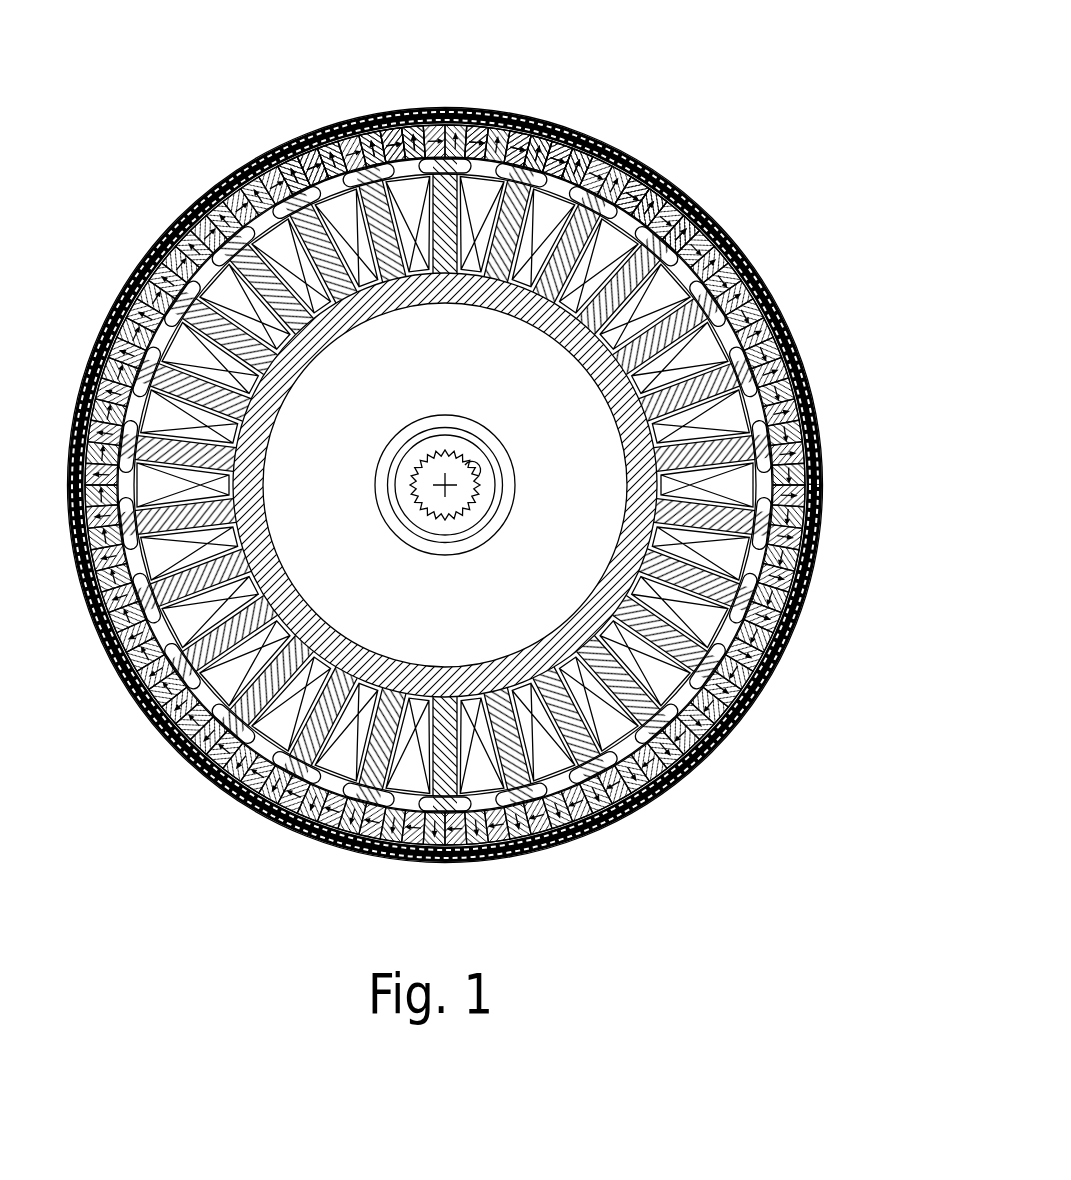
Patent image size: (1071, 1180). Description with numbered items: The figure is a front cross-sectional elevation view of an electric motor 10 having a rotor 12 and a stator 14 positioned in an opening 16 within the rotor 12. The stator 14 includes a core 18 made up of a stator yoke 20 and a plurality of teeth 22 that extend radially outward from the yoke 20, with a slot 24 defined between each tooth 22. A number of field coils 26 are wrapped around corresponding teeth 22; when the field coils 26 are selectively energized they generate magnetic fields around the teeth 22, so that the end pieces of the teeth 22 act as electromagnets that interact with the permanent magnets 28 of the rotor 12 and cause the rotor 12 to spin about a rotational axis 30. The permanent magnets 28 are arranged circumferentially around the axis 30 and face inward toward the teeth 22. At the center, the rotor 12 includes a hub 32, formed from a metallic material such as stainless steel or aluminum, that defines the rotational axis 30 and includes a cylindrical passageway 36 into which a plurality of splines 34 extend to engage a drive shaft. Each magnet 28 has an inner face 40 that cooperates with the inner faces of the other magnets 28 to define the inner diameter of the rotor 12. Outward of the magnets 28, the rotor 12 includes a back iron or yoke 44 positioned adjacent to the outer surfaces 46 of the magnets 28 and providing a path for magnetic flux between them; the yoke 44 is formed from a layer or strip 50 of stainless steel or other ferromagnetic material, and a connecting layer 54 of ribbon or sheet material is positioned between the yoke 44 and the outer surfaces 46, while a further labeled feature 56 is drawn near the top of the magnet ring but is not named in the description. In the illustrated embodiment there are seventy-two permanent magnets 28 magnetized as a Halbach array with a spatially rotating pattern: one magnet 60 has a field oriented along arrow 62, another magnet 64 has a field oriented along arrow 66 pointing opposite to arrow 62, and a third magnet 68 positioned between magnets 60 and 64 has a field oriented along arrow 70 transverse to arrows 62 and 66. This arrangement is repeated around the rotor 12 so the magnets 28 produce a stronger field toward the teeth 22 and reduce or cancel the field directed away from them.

The electric motor 10 is at (690, 74).
The rotor 12 is at (830, 346).
The stator 14 is at (544, 326).
The opening 16 is at (812, 566).
The core 18 is at (637, 503).
The stator yoke 20 is at (640, 441).
The teeth 22 is at (800, 440).
The slot 24 is at (728, 727).
The field coils 26 is at (512, 692).
The permanent magnets 28 is at (660, 188).
The rotational axis 30 is at (437, 495).
The hub 32 is at (428, 451).
The splines 34 is at (484, 478).
The cylindrical passageway 36 is at (458, 515).
The inner face 40 is at (726, 244).
The back iron or yoke 44 is at (545, 128).
The outer surfaces 46 is at (572, 127).
The strip 50 is at (645, 160).
The connecting layer 54 is at (470, 112).
The magnetization direction 56 is at (515, 106).
The magnet 60 is at (297, 150).
The arrow 62 is at (293, 158).
The magnet 64 is at (363, 123).
The arrow 66 is at (330, 137).
The third magnet 68 is at (403, 120).
The arrow 70 is at (375, 128).